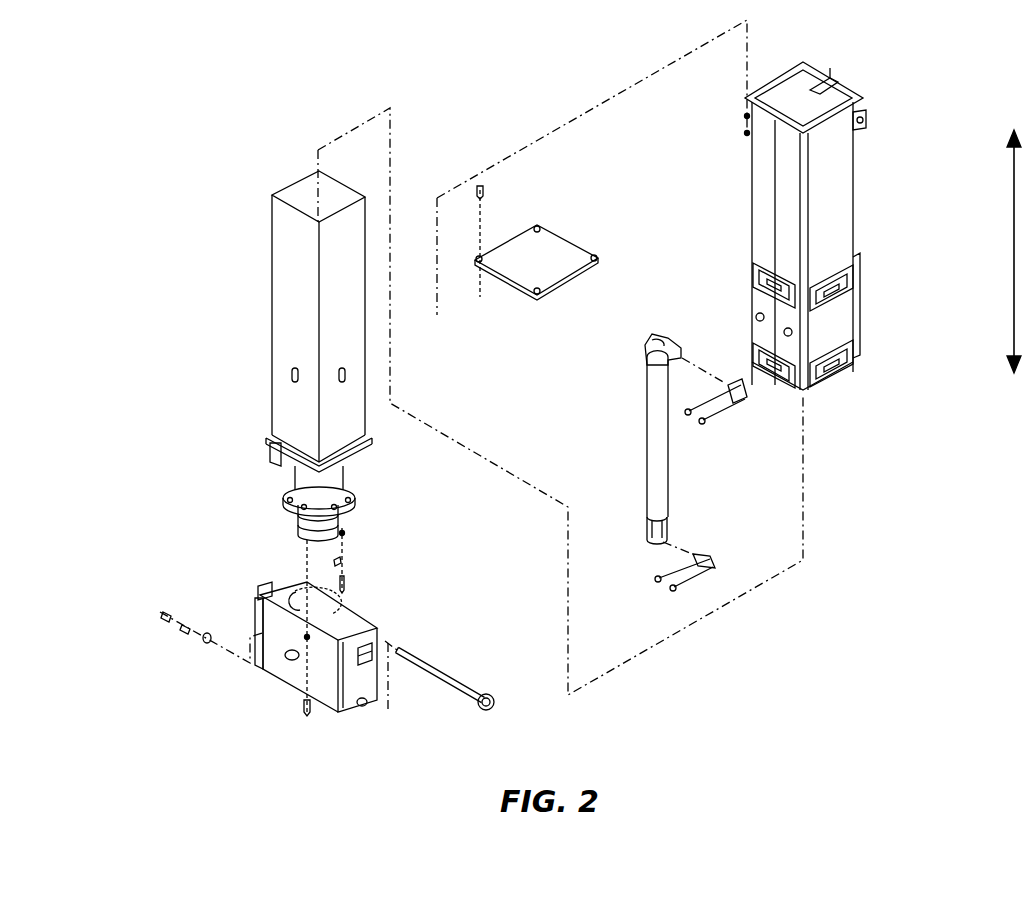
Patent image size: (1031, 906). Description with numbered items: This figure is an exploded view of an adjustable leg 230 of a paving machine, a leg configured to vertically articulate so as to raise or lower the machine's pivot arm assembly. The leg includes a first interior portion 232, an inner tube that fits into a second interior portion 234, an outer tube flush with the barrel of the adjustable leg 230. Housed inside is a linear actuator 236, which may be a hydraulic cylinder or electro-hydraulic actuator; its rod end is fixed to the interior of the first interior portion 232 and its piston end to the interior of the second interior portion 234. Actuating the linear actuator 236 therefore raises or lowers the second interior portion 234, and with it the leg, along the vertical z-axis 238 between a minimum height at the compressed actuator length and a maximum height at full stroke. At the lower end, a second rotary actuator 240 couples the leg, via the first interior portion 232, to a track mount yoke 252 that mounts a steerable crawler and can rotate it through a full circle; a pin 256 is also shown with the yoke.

The adjustable leg 230 is at (83, 132).
The first interior portion 232 is at (272, 417).
The second interior portion 234 is at (847, 188).
The linear actuator 236 is at (643, 427).
The z-axis 238 is at (1013, 283).
The second rotary actuator 240 is at (287, 480).
The track mount yoke 252 is at (355, 615).
The pivot bolt 256 is at (437, 670).